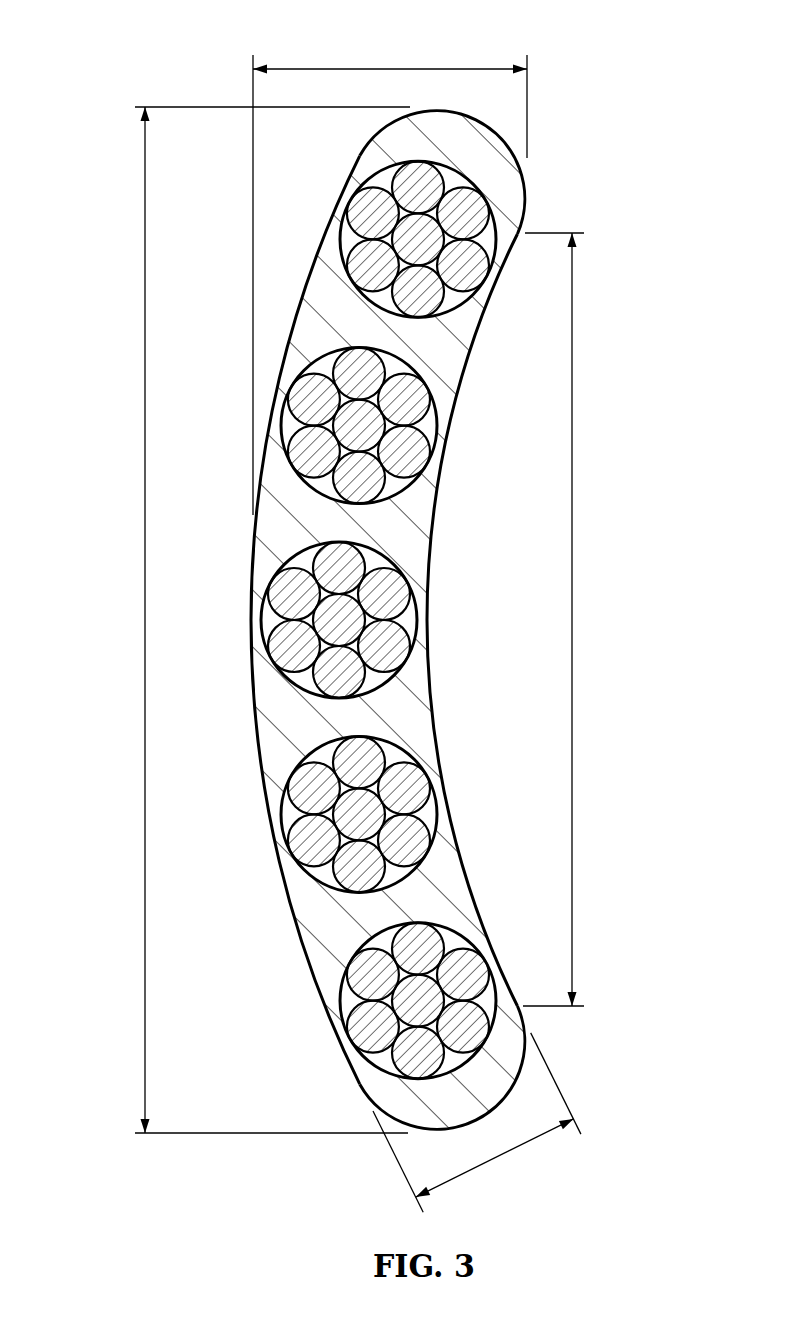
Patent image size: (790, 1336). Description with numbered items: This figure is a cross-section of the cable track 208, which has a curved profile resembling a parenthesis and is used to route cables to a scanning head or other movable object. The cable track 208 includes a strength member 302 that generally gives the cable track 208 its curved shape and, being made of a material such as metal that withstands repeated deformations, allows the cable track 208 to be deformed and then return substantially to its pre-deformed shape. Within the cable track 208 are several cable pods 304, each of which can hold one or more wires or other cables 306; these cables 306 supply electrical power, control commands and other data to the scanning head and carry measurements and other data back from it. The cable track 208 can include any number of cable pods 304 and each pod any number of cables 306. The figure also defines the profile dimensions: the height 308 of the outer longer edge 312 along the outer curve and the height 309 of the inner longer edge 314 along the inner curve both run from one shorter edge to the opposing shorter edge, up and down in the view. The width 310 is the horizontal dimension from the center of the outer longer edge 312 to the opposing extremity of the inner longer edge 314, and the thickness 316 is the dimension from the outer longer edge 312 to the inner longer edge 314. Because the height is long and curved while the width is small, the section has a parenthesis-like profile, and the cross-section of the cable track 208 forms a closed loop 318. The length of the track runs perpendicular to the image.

The cable track 208 is at (337, 565).
The strength member 302 is at (297, 887).
The cable pod 304 is at (287, 430).
The cable 306 is at (427, 394).
The height of outer longer edge 308 is at (144, 622).
The height of inner longer edge 309 is at (572, 608).
The width 310 is at (390, 69).
The outer longer edge 312 is at (240, 737).
The inner longer edge 314 is at (456, 739).
The thickness 316 is at (497, 1158).
The closed loop 318 is at (453, 511).